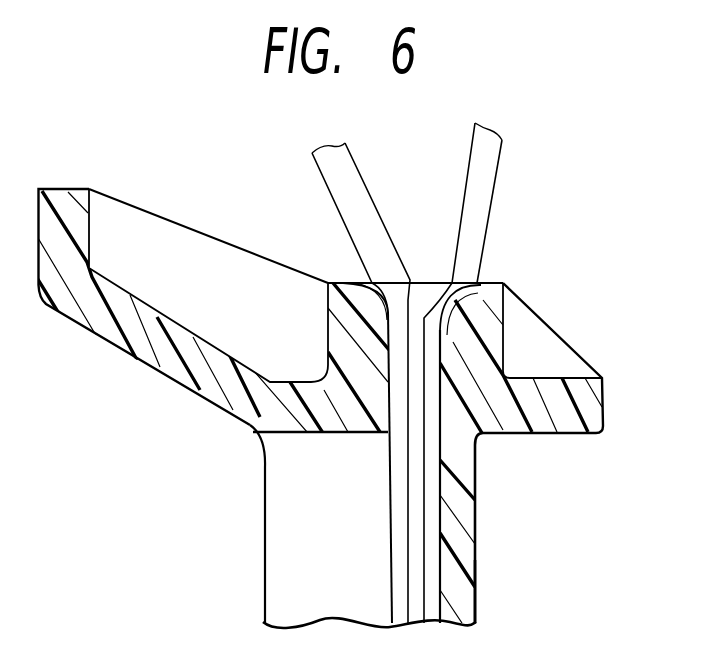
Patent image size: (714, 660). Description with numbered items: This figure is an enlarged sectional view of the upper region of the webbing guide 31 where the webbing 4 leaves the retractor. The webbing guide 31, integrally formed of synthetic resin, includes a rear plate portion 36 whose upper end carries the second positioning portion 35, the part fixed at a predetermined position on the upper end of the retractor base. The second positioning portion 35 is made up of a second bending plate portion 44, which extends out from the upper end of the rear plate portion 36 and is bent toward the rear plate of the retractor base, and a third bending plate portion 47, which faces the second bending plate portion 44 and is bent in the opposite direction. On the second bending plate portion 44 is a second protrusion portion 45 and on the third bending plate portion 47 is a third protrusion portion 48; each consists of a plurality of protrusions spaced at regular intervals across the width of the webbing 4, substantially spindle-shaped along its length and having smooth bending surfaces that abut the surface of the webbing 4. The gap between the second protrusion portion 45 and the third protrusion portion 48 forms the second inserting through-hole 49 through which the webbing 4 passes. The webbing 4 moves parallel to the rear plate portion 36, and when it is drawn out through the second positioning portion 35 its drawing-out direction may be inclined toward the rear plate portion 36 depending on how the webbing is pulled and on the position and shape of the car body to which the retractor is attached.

The second positioning portion 35 is at (133, 212).
The webbing 4 is at (386, 600).
The third protrusion portion 48 is at (352, 285).
The second inserting through-hole 49 is at (425, 284).
The second protrusion portion 45 is at (473, 282).
The second bending plate portion 44 is at (487, 303).
The third bending plate portion 47 is at (357, 330).
The webbing guide 31 is at (492, 531).
The rear plate portion 36 is at (474, 592).